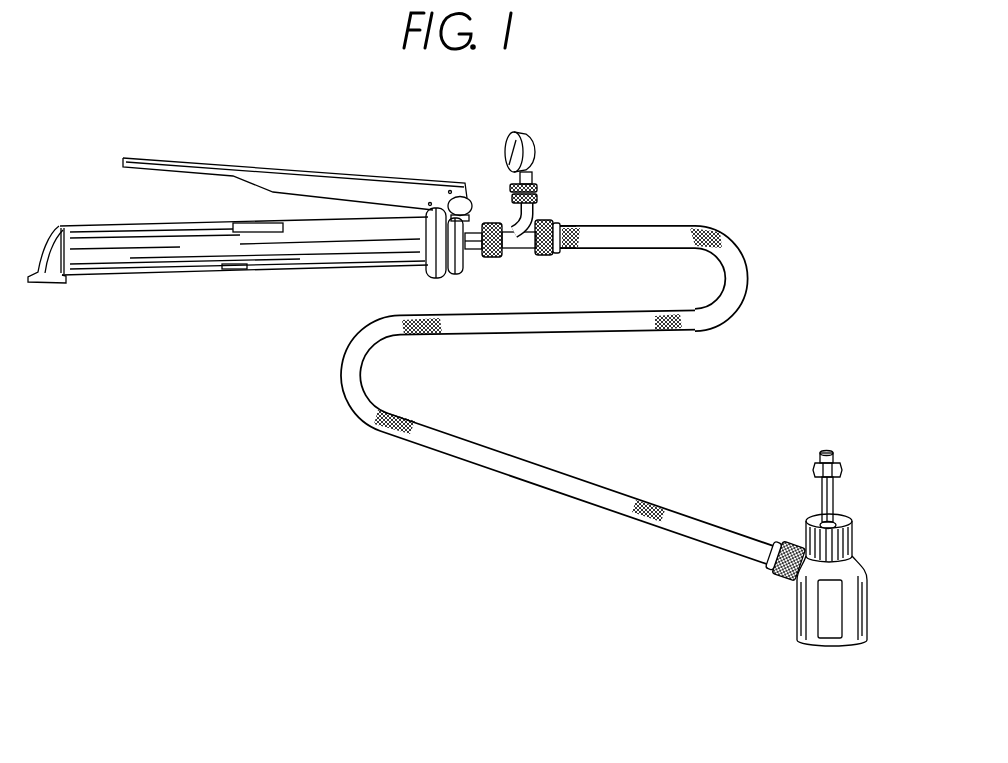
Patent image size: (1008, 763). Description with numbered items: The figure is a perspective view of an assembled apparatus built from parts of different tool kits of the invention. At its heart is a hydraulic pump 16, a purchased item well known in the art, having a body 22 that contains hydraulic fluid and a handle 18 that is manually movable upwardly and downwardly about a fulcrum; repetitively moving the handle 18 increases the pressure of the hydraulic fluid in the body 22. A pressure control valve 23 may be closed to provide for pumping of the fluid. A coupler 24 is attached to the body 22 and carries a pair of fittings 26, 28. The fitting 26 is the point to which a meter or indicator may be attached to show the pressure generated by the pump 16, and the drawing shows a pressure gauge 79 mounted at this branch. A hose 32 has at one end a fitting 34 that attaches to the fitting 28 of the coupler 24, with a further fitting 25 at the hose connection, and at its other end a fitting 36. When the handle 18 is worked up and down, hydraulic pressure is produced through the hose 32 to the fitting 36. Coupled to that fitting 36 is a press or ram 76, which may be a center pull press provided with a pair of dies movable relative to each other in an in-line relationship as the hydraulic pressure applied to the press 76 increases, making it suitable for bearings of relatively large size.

The hydraulic pump 16 is at (230, 273).
The handle 18 is at (328, 182).
The body 22 is at (310, 247).
The pressure control valve 23 is at (461, 206).
The coupler 24 is at (480, 268).
The hose coupling 25 is at (562, 225).
The fitting 26 is at (540, 208).
The fitting 28 is at (500, 256).
The hose 32 is at (533, 460).
The fitting 34 is at (585, 246).
The fitting 36 is at (772, 582).
The press or ram 76 is at (866, 583).
The pressure gauge 79 is at (538, 144).